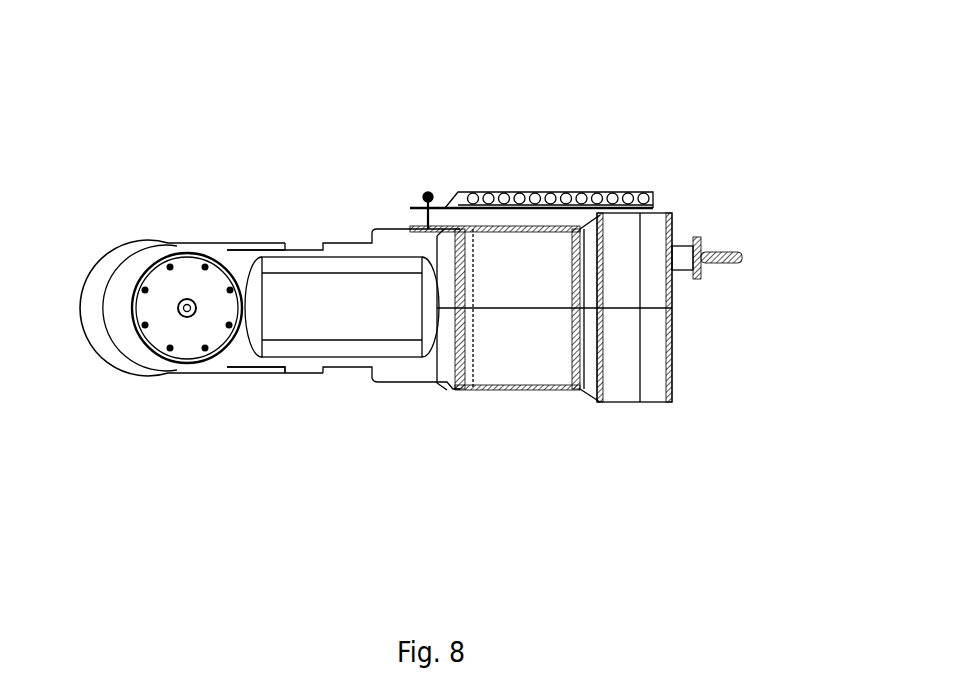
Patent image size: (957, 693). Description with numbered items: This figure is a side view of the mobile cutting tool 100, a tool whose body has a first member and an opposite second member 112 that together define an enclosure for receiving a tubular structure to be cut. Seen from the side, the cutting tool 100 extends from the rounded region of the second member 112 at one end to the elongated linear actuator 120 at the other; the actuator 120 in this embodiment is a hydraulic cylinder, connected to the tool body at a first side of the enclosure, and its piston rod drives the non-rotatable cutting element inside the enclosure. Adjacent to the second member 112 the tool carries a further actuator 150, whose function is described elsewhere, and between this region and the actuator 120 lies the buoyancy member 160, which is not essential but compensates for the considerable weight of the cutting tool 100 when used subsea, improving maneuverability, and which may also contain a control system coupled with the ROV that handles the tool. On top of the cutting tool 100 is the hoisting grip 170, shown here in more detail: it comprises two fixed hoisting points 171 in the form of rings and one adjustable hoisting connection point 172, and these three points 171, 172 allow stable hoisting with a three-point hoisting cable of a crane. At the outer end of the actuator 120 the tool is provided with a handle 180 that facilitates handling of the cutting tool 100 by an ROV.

The mobile cutting tool 100 is at (121, 122).
The second member 112 is at (135, 282).
The further actuator 150 is at (170, 321).
The buoyancy member 160 is at (297, 312).
The actuator 120 is at (510, 333).
The hoisting grip 170 is at (512, 207).
The fixed hoisting points 171 is at (426, 192).
The adjustable hoisting connection point 172 is at (540, 202).
The handle 180 is at (727, 252).